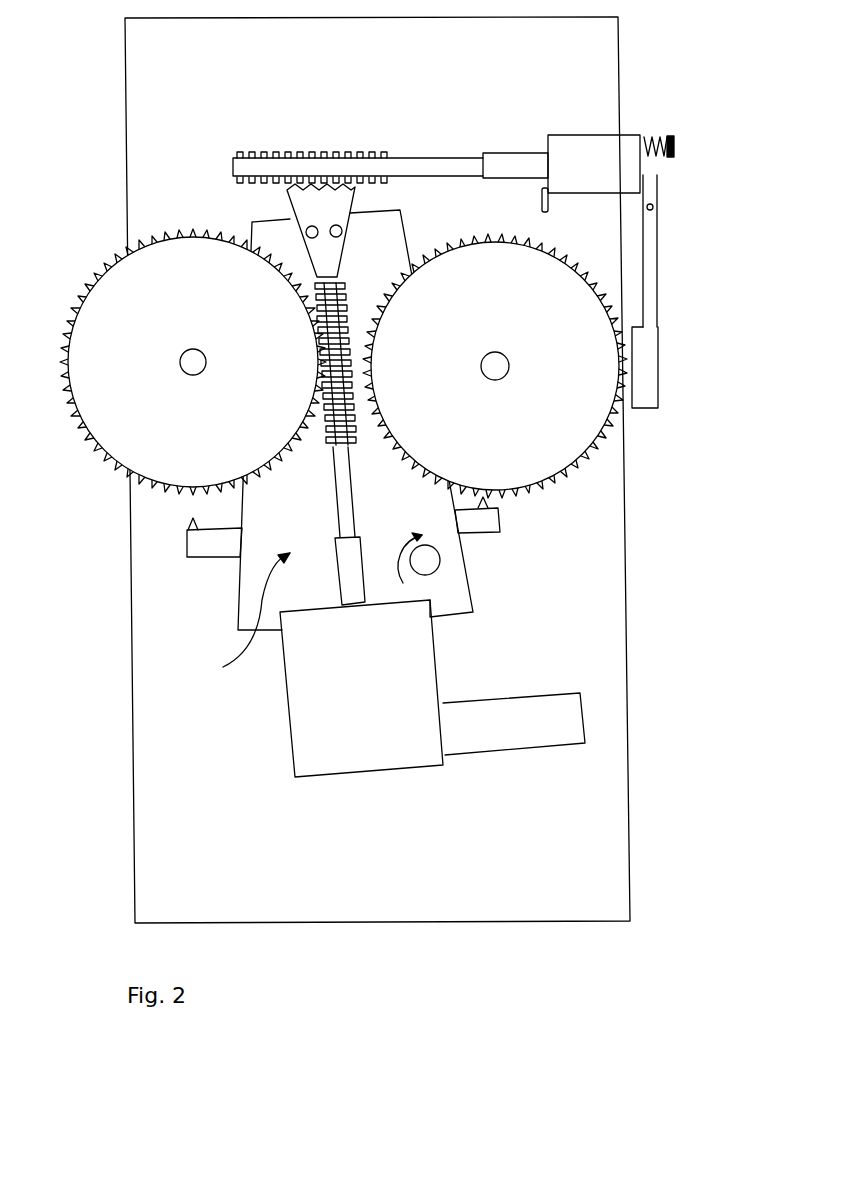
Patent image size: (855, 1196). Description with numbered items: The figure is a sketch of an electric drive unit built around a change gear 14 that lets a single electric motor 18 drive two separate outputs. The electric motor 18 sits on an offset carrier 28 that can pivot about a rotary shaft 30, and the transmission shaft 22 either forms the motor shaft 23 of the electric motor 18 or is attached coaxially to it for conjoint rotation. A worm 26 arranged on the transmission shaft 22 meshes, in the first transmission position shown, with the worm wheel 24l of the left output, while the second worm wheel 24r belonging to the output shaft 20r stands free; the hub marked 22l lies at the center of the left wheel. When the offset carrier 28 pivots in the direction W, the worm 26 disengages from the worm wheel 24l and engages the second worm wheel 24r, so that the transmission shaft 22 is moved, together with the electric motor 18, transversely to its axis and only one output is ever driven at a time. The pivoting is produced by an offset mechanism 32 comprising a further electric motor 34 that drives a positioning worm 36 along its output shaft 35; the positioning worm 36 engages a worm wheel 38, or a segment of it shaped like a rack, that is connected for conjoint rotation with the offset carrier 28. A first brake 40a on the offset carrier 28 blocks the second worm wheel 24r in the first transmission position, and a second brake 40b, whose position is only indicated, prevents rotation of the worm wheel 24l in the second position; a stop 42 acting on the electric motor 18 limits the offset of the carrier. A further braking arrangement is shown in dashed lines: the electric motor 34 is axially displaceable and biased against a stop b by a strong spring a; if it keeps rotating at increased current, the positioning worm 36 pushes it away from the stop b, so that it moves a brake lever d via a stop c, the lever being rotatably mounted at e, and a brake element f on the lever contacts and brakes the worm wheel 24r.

The change gear 14 is at (249, 623).
The electric motor 18 is at (372, 723).
The output shaft 20r is at (495, 368).
The left roller 22l is at (196, 357).
The transmission shaft 22 is at (340, 482).
The motor shaft 23 is at (342, 560).
The worm wheel 24l is at (140, 252).
The second worm wheel 24r is at (612, 418).
The worm 26 is at (328, 446).
The offset carrier 28 is at (393, 253).
The rotary shaft 30 is at (430, 560).
The offset mechanism 32 is at (573, 92).
The electric motor 34 is at (608, 173).
The output shaft 35 is at (502, 162).
The positioning worm 36 is at (318, 152).
The worm wheel 38 is at (313, 200).
The first brake 40a is at (490, 500).
The second brake 40b is at (192, 527).
The stop 42 is at (520, 730).
The spring a is at (655, 140).
The stop b is at (548, 197).
The stop c is at (647, 200).
The brake lever d is at (648, 185).
The rotatable mounting e is at (652, 208).
The brake element f is at (642, 365).
The direction W is at (402, 550).